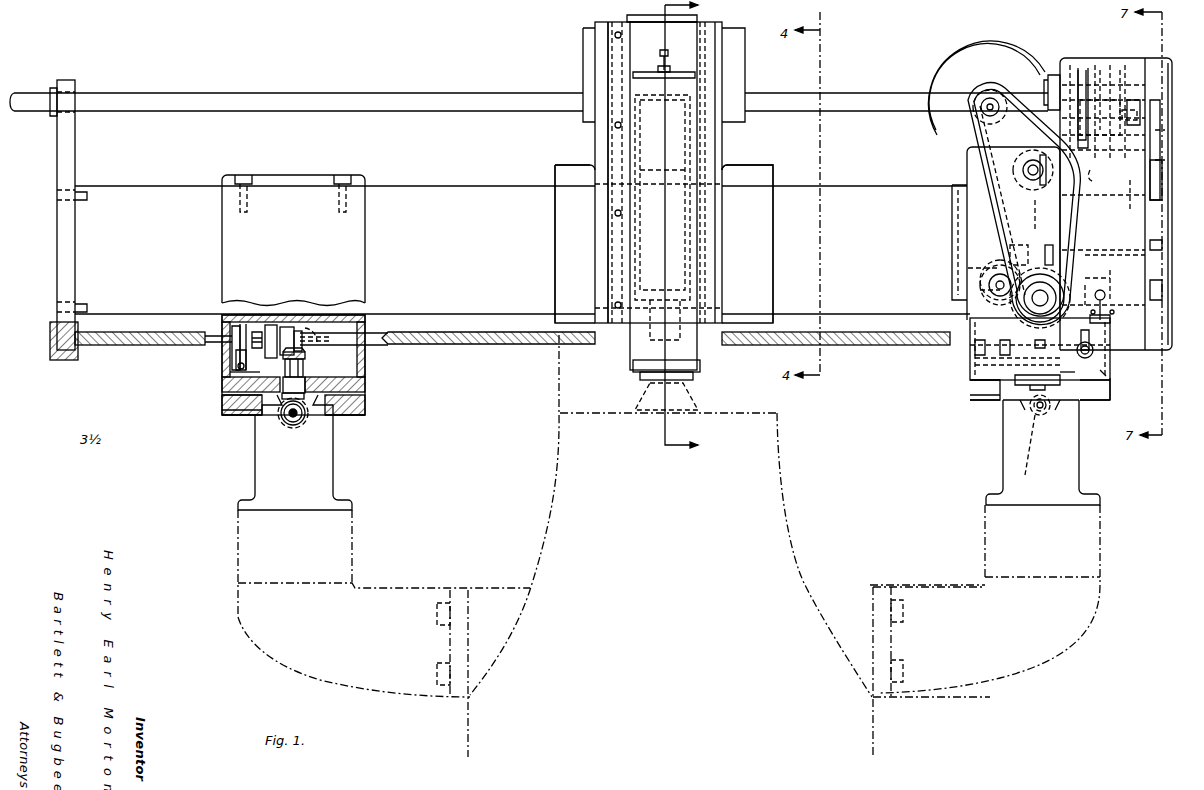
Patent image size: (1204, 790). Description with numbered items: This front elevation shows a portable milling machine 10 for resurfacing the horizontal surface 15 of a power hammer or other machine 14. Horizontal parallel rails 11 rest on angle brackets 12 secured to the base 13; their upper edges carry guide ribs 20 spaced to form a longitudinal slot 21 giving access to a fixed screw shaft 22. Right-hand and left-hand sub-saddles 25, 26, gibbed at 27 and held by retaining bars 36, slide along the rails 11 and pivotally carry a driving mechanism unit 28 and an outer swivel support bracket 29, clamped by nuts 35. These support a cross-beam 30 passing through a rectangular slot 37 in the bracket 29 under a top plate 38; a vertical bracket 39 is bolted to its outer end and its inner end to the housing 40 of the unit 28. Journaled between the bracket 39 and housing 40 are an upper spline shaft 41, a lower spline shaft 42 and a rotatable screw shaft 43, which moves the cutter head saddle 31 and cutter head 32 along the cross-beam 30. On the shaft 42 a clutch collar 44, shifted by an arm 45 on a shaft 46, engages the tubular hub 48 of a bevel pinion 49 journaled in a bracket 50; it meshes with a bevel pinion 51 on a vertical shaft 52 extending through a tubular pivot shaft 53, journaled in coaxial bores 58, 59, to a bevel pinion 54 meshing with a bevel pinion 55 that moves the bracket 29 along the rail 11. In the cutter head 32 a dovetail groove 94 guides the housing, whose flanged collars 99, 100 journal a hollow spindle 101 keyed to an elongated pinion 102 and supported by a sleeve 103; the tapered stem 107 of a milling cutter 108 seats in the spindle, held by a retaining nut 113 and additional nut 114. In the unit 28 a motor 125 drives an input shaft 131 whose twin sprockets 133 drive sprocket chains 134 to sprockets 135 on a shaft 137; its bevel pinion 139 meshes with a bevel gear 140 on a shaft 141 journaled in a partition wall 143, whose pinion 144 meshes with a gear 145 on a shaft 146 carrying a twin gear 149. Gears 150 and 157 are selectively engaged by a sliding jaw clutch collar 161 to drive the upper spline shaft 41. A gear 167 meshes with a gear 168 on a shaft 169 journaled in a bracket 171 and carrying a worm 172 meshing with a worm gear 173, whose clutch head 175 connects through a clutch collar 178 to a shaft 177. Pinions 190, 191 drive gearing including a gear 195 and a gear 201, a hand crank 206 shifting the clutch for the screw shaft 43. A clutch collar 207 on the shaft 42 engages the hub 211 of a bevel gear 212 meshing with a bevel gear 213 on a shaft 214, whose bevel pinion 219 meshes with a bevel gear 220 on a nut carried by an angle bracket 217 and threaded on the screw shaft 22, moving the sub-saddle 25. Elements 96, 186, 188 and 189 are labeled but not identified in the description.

The portable milling machine 10 is at (1030, 55).
The horizontal parallel rails 11 is at (330, 479).
The angle brackets 12 is at (377, 583).
The base 13 is at (875, 725).
The power hammer or other machine 14 is at (784, 455).
The horizontal surface 15 is at (750, 410).
The parallel guide ribs 20 is at (990, 395).
The longitudinal slot 21 is at (265, 410).
The screw shaft 22 is at (293, 426).
The right-hand sub-saddle 25 is at (1110, 394).
The left-hand sub-saddle 26 is at (368, 400).
The gibs 27 is at (222, 402).
The driving mechanism unit 28 is at (1113, 223).
The outer swivel support bracket 29 is at (356, 255).
The cross-beam 30 is at (465, 184).
The cutter head saddle 31 is at (756, 165).
The cutter head 32 is at (630, 360).
The nuts 35 is at (1082, 350).
The retaining bars 36 is at (235, 415).
The rectangular horizontal slot 37 is at (232, 314).
The top plate 38 is at (293, 178).
The vertical bracket 39 is at (75, 153).
The housing 40 is at (967, 168).
The upper spline shaft 41 is at (435, 93).
The lower spline shaft 42 is at (376, 348).
The rotatable screw shaft 43 is at (125, 347).
The sliding jaw-toothed clutch collar 44 is at (241, 328).
The shift arm 45 is at (233, 358).
The shaft 46 is at (230, 370).
The tubular hub 48 is at (261, 331).
The bevel pinion 49 is at (288, 326).
The bracket 50 is at (273, 324).
The bevel pinion 51 is at (298, 342).
The vertical shaft 52 is at (321, 330).
The tubular pivot shaft 53 is at (305, 360).
The bevel pinion 54 is at (278, 405).
The bevel pinion 55 is at (299, 420).
The bore 58 is at (328, 376).
The bore 59 is at (365, 384).
The dovetail groove 94 is at (690, 40).
The column wall 96 is at (615, 136).
The flanged collar 99 is at (685, 70).
The flanged collar 100 is at (702, 366).
The hollow cutter spindle 101 is at (640, 250).
The elongated pinion 102 is at (612, 155).
The sleeve 103 is at (700, 248).
The tapered stem 107 is at (642, 382).
The milling cutter 108 is at (698, 395).
The retaining nut 113 is at (658, 68).
The additional nut 114 is at (660, 55).
The motor 125 is at (965, 65).
The input shaft 131 is at (968, 112).
The twin sprockets 133 is at (996, 122).
The sprocket chains 134 is at (955, 215).
The sprockets 135 is at (1002, 200).
The shaft 137 is at (1028, 163).
The bevel pinion 139 is at (1020, 180).
The bevel gear 140 is at (1042, 190).
The shaft 141 is at (1106, 184).
The partition wall 143 is at (1130, 208).
The pinion 144 is at (1157, 187).
The gear 145 is at (1180, 137).
The shaft 146 is at (1178, 165).
The twin gear 149 is at (1109, 132).
The gear 150 is at (1123, 65).
The gear 157 is at (1083, 70).
The sliding jaw clutch collar 161 is at (1115, 85).
The gear 167 is at (1098, 268).
The gear 168 is at (985, 266).
The shaft 169 is at (980, 290).
The bracket 171 is at (1015, 215).
The worm 172 is at (968, 270).
The worm gear 173 is at (997, 263).
The toothed jaw clutch head 175 is at (1031, 246).
The shaft 177 is at (1096, 250).
The toothed sliding jaw clutch collar 178 is at (1060, 242).
The drive pulley 186 is at (1040, 295).
The bracket 188 is at (1168, 250).
The bracket 189 is at (1168, 288).
The pinion 190 is at (1123, 278).
The pinion 191 is at (1103, 288).
The gear 195 is at (1108, 385).
The gear 201 is at (1125, 380).
The hand crank 206 is at (1105, 300).
The toothed jaw clutch collar 207 is at (973, 352).
The hub 211 is at (972, 366).
The bevel gear 212 is at (972, 380).
The bevel gear 213 is at (1050, 337).
The shaft 214 is at (1065, 380).
The angle bracket 217 is at (1040, 405).
The bevel pinion 219 is at (1015, 380).
The bevel gear 220 is at (1021, 449).